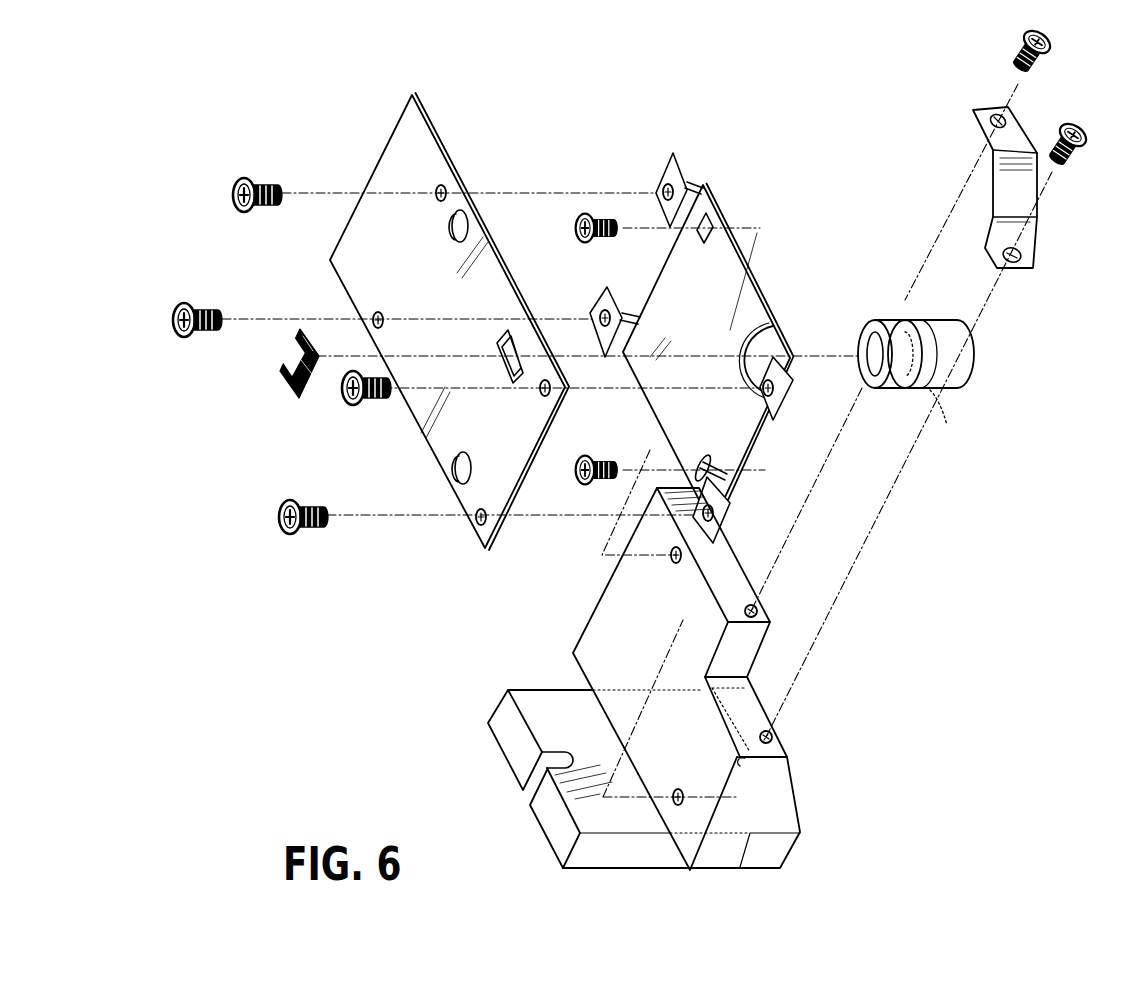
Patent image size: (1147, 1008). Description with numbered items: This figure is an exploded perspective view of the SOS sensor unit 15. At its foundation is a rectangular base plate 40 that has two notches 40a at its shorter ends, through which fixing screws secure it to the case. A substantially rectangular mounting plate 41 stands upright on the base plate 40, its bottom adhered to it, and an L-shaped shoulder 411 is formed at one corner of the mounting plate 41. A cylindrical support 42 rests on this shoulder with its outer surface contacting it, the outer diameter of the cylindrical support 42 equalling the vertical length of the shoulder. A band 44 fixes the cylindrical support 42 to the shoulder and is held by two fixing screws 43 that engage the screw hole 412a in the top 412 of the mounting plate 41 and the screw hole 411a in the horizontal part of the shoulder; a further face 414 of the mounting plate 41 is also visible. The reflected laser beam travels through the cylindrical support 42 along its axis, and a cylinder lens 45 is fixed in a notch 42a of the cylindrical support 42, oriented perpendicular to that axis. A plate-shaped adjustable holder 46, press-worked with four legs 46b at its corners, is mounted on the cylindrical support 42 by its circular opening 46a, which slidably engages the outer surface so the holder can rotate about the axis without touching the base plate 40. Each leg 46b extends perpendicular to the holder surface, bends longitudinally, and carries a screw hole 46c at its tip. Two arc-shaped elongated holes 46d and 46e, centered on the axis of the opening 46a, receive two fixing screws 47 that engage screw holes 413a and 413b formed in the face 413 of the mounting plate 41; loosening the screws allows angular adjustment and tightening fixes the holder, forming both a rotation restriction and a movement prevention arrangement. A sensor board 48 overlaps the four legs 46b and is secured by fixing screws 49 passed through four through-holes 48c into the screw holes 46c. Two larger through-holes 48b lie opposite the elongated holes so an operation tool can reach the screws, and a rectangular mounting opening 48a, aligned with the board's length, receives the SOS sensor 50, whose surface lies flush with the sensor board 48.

The SOS sensor unit 15 is at (828, 150).
The base plate 40 is at (673, 679).
The notch 40a is at (587, 724).
The mounting plate 41 is at (750, 802).
The L-shaped shoulder 411 is at (747, 705).
The screw hole 411a is at (777, 733).
The post portion 412 is at (742, 585).
The screw hole 412a is at (807, 612).
The mounting plate portion 413 is at (595, 633).
The screw hole 413a is at (678, 790).
The screw hole 413b is at (677, 563).
The side surface 414 is at (753, 640).
The cylindrical support 42 is at (933, 320).
The notch 42a is at (903, 315).
The fixing screw 43 is at (1040, 62).
The band 44 is at (993, 182).
The cylinder lens 45 is at (958, 418).
The adjustable holder 46 is at (753, 268).
The circular opening 46a is at (738, 338).
The leg 46b is at (680, 172).
The screw hole 46c is at (666, 190).
The elongated hole 46d is at (733, 425).
The elongated hole 46e is at (710, 210).
The fixing screw 47 is at (575, 225).
The sensor board 48 is at (408, 157).
The rectangular mounting opening 48a is at (497, 337).
The through-hole 48b is at (452, 231).
The through-hole 48c is at (444, 186).
The fixing screw 49 is at (295, 158).
The SOS sensor 50 is at (298, 362).